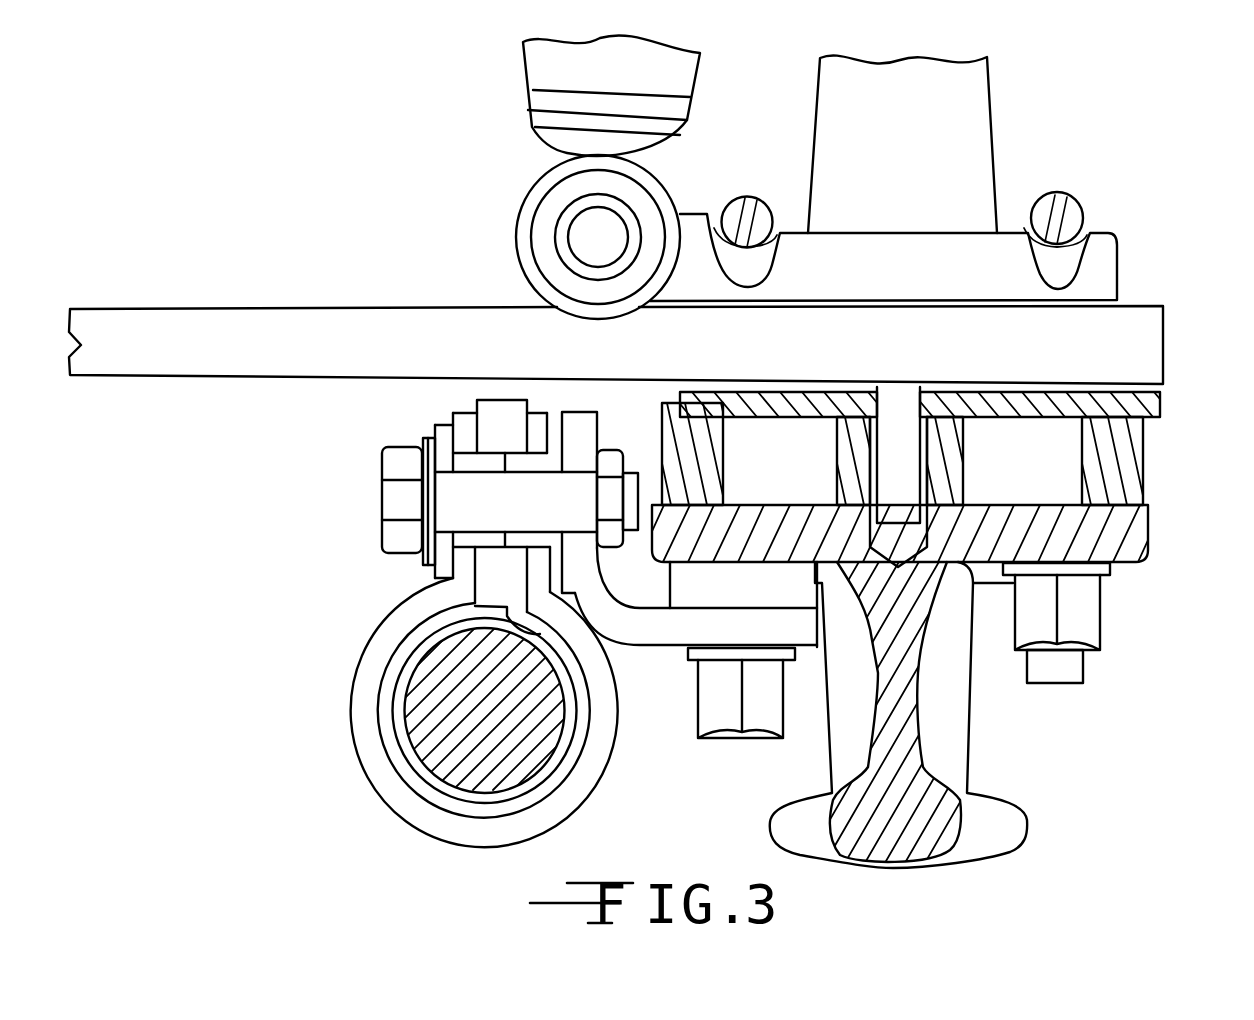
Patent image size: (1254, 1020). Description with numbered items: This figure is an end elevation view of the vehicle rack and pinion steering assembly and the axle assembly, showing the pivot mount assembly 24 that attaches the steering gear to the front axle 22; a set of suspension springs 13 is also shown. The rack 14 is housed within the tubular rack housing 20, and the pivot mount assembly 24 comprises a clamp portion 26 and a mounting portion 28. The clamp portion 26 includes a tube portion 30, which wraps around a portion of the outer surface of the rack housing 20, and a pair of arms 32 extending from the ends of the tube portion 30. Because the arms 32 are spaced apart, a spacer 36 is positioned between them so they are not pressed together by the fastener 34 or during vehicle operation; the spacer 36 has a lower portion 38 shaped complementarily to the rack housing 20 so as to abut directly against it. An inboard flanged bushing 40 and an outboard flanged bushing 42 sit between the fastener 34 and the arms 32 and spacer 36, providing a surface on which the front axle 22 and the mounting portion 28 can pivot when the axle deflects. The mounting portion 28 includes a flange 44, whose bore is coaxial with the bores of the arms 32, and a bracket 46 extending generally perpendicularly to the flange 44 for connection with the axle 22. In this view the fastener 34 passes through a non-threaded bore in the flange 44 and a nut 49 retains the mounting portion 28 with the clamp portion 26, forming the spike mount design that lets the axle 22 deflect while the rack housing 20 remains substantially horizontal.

The suspension springs 13 is at (677, 92).
The rack 14 is at (433, 720).
The rack housing 20 is at (388, 673).
The front axle 22 is at (1148, 547).
The pivot mount assembly 24 is at (657, 727).
The clamp portion 26 is at (484, 710).
The mounting portion 28 is at (803, 652).
The tube portion 30 is at (365, 767).
The arms 32 is at (447, 418).
The fastener 34 is at (387, 500).
The spacer 36 is at (472, 463).
The lower portion 38 is at (505, 610).
The inboard flanged bushing 40 is at (552, 450).
The outboard flanged bushing 42 is at (488, 398).
The flange 44 is at (578, 442).
The bracket 46 is at (668, 643).
The nut 49 is at (612, 502).